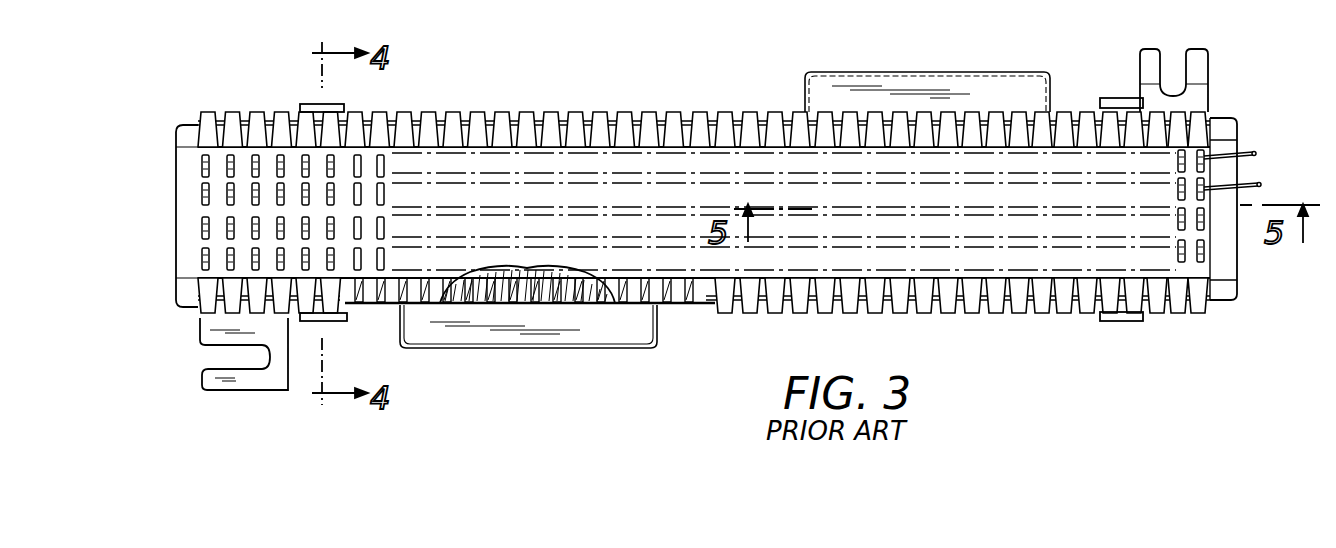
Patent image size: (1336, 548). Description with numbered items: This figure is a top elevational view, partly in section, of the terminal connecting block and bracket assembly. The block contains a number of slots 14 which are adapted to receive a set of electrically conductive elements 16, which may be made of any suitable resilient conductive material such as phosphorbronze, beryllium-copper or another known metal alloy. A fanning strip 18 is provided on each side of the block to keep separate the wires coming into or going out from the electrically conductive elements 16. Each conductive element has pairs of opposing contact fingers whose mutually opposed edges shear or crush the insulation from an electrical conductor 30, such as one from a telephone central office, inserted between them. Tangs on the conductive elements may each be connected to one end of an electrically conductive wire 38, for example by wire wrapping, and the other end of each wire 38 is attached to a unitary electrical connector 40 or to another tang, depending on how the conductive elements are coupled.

The slots 14 is at (384, 162).
The electrically conductive elements 16 is at (200, 200).
The fanning strip 18 is at (1214, 112).
The electrical conductor 30 is at (1260, 183).
The electrically conductive wire 38 is at (553, 278).
The unitary electrical connector 40 is at (898, 76).